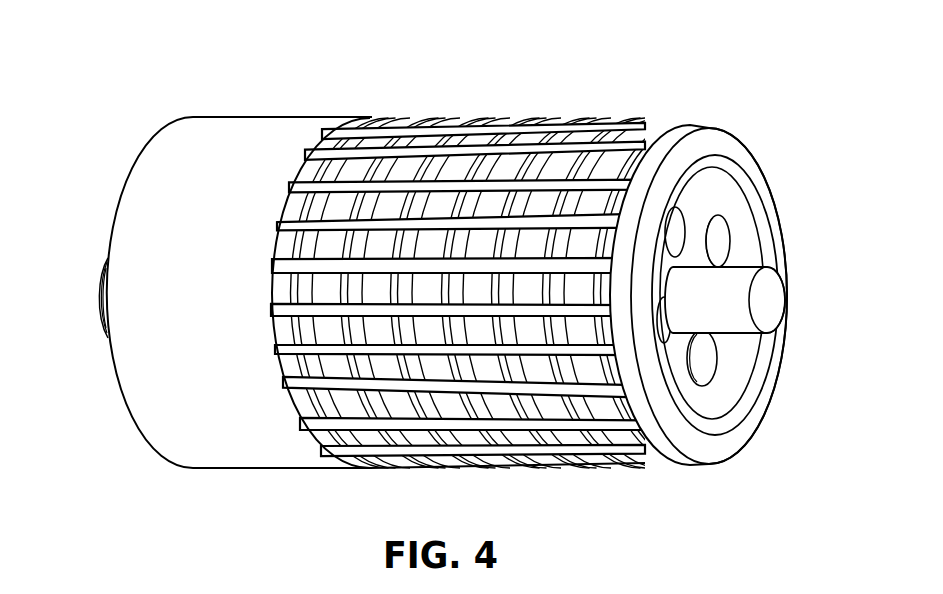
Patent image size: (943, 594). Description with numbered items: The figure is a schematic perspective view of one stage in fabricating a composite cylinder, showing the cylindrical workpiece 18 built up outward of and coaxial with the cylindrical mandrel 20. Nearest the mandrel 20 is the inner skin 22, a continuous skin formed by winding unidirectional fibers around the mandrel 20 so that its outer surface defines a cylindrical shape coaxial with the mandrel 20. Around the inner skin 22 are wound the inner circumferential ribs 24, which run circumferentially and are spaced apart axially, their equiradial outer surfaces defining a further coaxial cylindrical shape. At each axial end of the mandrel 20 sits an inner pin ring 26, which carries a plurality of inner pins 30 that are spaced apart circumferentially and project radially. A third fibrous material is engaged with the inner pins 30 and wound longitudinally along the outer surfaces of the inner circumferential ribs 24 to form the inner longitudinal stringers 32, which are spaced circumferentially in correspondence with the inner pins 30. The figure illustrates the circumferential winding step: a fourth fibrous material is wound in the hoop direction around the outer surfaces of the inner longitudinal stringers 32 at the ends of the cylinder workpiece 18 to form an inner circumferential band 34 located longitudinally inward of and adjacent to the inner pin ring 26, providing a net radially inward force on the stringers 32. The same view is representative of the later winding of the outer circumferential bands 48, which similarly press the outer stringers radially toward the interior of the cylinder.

The cylindrical workpiece 18 is at (163, 180).
The inner circumferential band 34 is at (213, 142).
The outer circumferential band 48 is at (213, 142).
The inner skin 22 is at (492, 242).
The inner longitudinal stringer 32 is at (505, 153).
The inner circumferential rib 24 is at (573, 197).
The inner pin 30 is at (655, 157).
The inner pin ring 26 is at (720, 298).
The mandrel 20 is at (737, 293).